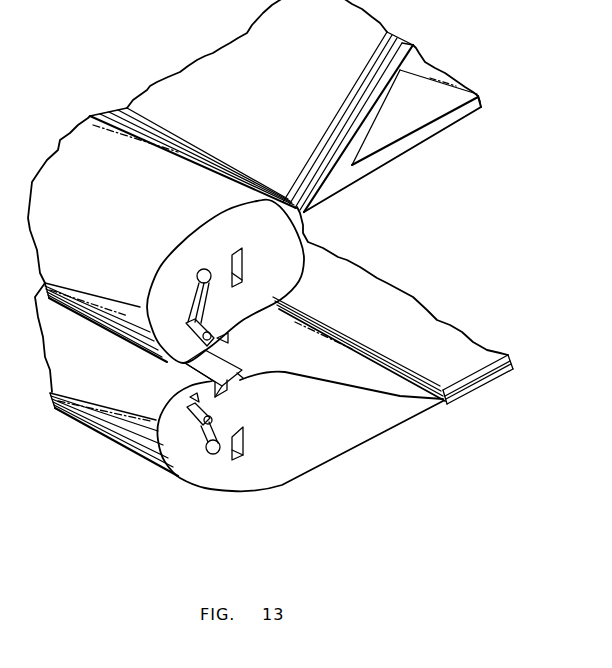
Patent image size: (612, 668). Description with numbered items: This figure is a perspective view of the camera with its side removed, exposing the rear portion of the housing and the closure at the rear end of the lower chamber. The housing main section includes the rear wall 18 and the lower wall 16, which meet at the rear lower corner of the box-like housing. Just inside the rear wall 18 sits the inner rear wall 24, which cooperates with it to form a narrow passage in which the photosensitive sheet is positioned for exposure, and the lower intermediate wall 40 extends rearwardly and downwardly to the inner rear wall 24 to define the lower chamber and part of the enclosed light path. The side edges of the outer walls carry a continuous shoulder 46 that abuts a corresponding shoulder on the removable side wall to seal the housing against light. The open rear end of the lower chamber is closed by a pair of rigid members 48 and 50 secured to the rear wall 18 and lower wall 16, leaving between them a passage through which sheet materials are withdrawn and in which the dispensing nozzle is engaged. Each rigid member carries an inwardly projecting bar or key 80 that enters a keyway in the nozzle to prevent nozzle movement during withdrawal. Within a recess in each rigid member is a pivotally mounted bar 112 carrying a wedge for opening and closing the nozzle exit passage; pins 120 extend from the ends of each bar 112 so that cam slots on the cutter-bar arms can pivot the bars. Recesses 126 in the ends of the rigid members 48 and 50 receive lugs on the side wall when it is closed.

The lower wall 16 is at (393, 331).
The rear wall 18 is at (277, 101).
The inner rear wall 24 is at (390, 104).
The lower intermediate wall 40 is at (392, 128).
The continuous shoulder 46 is at (282, 254).
The rigid member 48 is at (203, 263).
The rigid member 50 is at (309, 434).
The bar or key 80 is at (239, 356).
The bar 112 is at (188, 480).
The pin 120 is at (228, 361).
The recess 126 is at (227, 506).